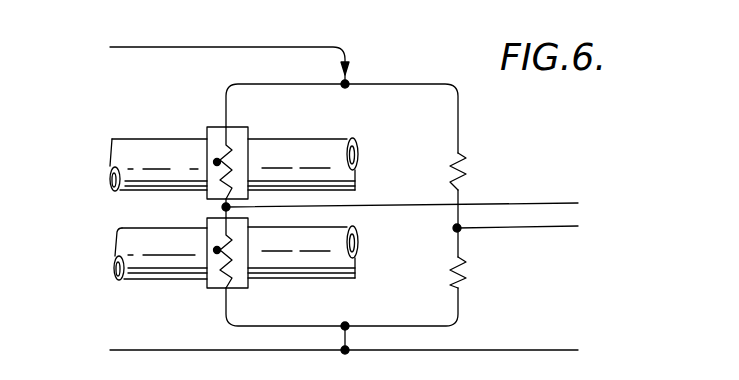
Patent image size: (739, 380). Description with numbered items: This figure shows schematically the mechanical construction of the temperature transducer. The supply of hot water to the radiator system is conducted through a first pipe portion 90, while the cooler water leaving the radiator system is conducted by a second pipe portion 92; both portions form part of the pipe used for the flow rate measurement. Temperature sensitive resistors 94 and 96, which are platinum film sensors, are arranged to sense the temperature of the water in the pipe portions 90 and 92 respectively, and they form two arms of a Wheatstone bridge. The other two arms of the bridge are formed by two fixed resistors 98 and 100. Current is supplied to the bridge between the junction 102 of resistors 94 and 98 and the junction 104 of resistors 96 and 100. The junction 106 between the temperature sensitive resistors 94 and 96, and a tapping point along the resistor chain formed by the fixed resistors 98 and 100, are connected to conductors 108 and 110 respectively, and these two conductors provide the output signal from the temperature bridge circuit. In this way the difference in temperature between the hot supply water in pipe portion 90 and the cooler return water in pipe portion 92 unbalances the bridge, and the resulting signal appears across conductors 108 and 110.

The first pipe portion 90 is at (109, 143).
The second pipe portion 92 is at (121, 282).
The temperature sensitive resistor 94 is at (219, 150).
The temperature sensitive resistor 96 is at (218, 264).
The fixed resistor 98 is at (452, 168).
The fixed resistor 100 is at (450, 278).
The junction 102 is at (345, 89).
The junction 104 is at (346, 322).
The junction 106 is at (222, 207).
The conductor 108 is at (530, 204).
The conductor 110 is at (519, 229).